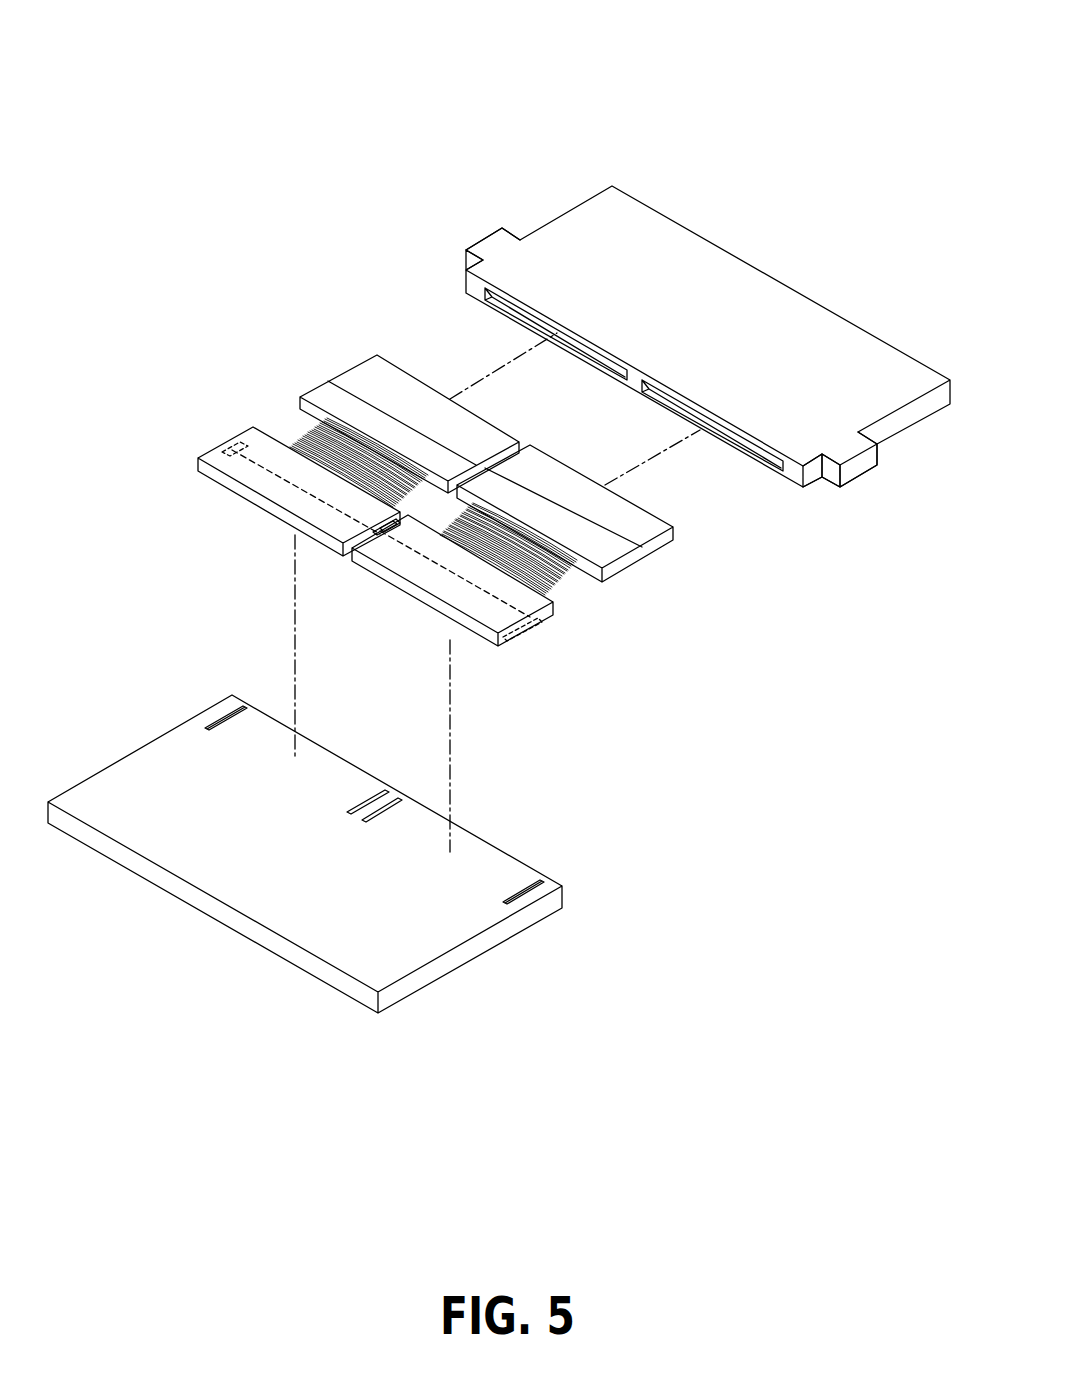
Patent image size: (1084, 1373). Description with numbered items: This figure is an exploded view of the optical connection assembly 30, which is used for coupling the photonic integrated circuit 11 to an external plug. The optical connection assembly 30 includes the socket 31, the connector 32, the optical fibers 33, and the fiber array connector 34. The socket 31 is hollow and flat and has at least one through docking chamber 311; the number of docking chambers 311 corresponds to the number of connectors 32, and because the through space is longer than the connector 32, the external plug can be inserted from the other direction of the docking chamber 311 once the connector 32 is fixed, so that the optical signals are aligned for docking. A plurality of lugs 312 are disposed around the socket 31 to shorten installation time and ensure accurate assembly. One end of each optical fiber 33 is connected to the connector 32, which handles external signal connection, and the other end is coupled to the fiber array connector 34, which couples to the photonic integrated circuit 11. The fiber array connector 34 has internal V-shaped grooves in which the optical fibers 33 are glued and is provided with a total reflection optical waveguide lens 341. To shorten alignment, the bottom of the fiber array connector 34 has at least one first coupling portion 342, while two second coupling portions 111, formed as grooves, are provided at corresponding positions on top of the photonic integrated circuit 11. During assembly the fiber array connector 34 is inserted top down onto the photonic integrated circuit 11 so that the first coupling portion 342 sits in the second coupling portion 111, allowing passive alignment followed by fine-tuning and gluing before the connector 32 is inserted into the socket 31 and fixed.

The optical connection assembly 30 is at (418, 62).
The socket 31 is at (548, 278).
The docking chamber 311 is at (592, 352).
The lugs 312 is at (478, 239).
The connector 32 is at (369, 377).
The optical fibers 33 is at (320, 437).
The fiber array connector 34 is at (235, 440).
The total reflection optical waveguide lens 341 is at (283, 522).
The first coupling portion 342 is at (232, 468).
The photonic integrated circuit 11 is at (462, 868).
The second coupling portion 111 is at (226, 718).